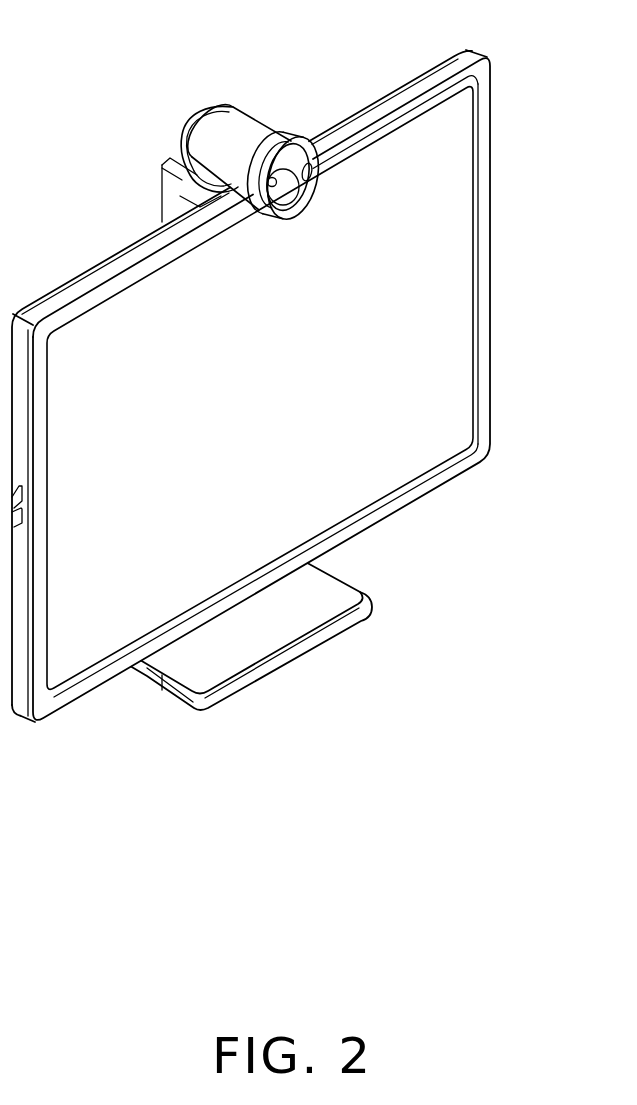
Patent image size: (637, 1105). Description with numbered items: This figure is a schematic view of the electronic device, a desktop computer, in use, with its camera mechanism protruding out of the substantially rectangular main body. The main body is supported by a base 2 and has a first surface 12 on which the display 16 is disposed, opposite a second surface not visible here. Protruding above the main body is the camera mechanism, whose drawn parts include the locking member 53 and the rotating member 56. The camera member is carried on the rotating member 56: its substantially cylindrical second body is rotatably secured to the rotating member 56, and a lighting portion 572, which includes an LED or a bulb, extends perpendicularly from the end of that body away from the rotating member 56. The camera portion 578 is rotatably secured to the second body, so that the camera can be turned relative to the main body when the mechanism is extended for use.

The base 2 is at (340, 602).
The first surface 12 is at (485, 228).
The display 16 is at (443, 352).
The locking member 53 is at (193, 117).
The rotating member 56 is at (228, 134).
The lighting portion 572 is at (299, 145).
The camera portion 578 is at (257, 185).